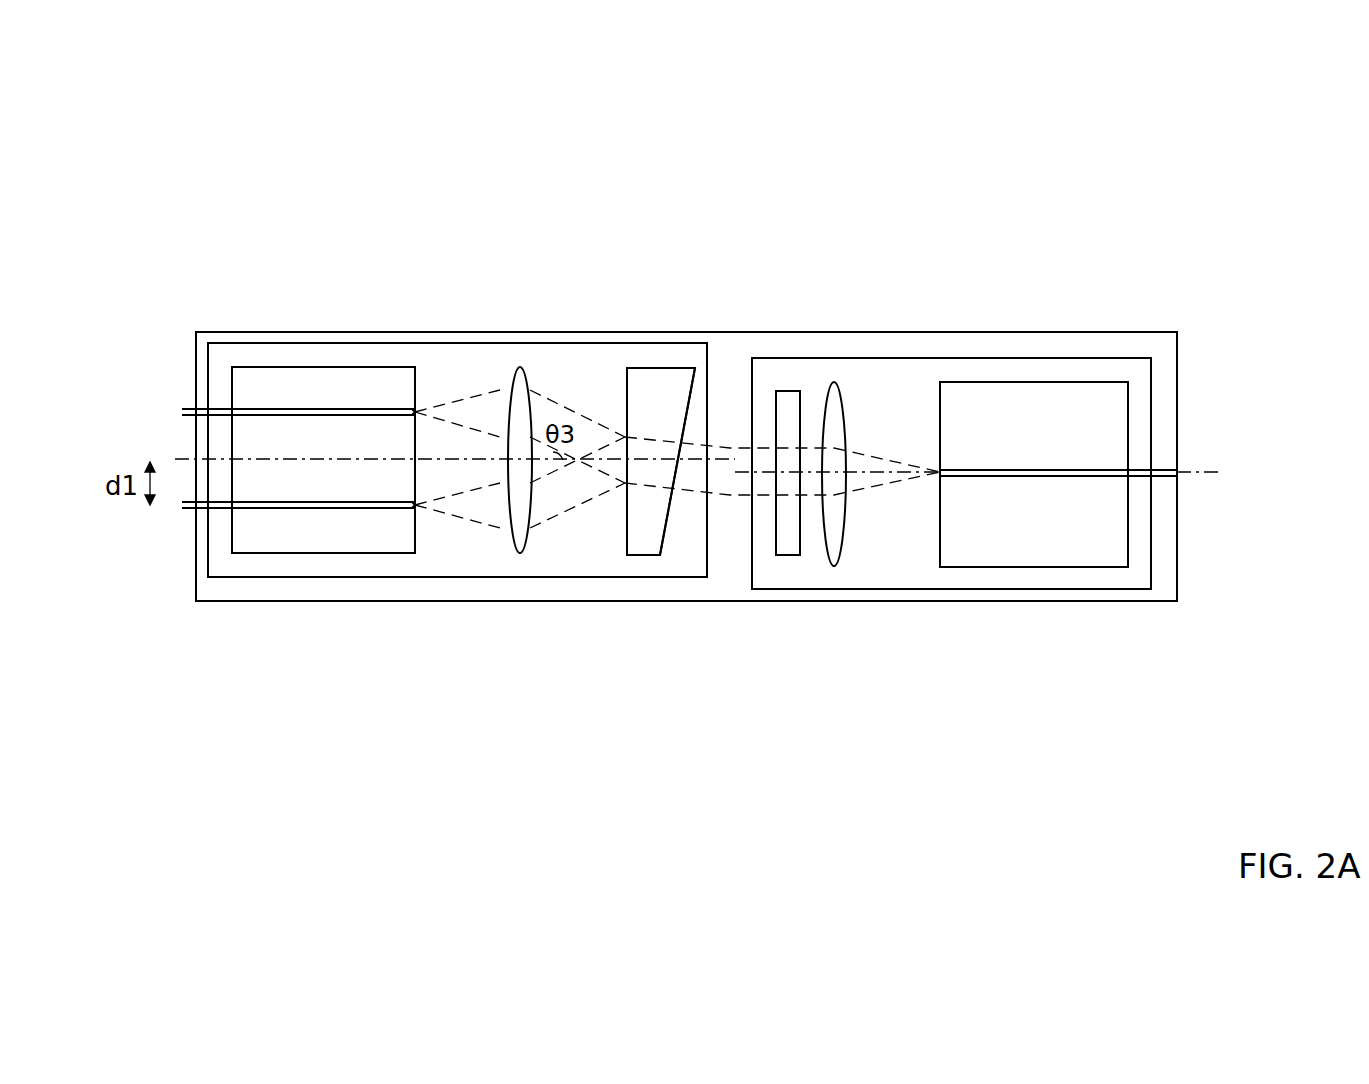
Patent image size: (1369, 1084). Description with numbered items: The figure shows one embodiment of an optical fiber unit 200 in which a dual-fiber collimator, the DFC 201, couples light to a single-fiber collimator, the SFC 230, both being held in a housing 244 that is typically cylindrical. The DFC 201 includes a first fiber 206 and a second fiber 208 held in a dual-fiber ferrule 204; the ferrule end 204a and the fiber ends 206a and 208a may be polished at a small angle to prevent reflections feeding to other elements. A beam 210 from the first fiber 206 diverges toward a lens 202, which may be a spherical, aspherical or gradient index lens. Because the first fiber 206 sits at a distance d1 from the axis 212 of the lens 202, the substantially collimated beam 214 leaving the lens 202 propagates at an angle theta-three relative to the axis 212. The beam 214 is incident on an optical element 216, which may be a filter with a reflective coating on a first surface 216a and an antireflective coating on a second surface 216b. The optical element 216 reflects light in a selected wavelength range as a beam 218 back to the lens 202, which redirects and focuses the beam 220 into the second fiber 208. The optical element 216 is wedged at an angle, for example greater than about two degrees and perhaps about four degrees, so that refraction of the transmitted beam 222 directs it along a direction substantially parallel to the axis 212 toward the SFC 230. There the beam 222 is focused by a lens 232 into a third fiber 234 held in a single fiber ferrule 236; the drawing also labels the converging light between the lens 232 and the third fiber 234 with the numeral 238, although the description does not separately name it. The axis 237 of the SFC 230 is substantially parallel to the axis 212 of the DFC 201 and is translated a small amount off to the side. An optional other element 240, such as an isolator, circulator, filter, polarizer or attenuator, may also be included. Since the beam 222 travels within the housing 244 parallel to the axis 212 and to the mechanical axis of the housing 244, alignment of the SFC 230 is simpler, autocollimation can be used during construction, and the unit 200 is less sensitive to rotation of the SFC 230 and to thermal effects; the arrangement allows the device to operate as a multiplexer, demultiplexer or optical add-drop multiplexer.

The optical fiber unit 200 is at (1108, 263).
The dual-fiber collimator (DFC) 201 is at (252, 343).
The lens 202 is at (520, 368).
The dual-fiber ferrule 204 is at (277, 555).
The ferrule end 204a is at (415, 373).
The first fiber 206 is at (192, 408).
The first fiber end 206a is at (417, 410).
The second fiber 208 is at (193, 510).
The second fiber end 208a is at (418, 513).
The beam 210 is at (463, 398).
The axis 212 is at (220, 458).
The beam 214 is at (580, 412).
The optical element 216 is at (647, 368).
The first surface 216a is at (624, 547).
The second surface 216b is at (667, 533).
The beam 218 is at (537, 527).
The beam 220 is at (473, 517).
The transmitted beam 222 is at (718, 447).
The single-fiber collimator (SFC) 230 is at (917, 358).
The lens 232 is at (834, 382).
The third fiber 234 is at (1177, 478).
The single fiber ferrule 236 is at (988, 382).
The axis 237 is at (1212, 470).
The focused beam 238 is at (893, 487).
The other element 240 is at (788, 557).
The housing 244 is at (1012, 603).